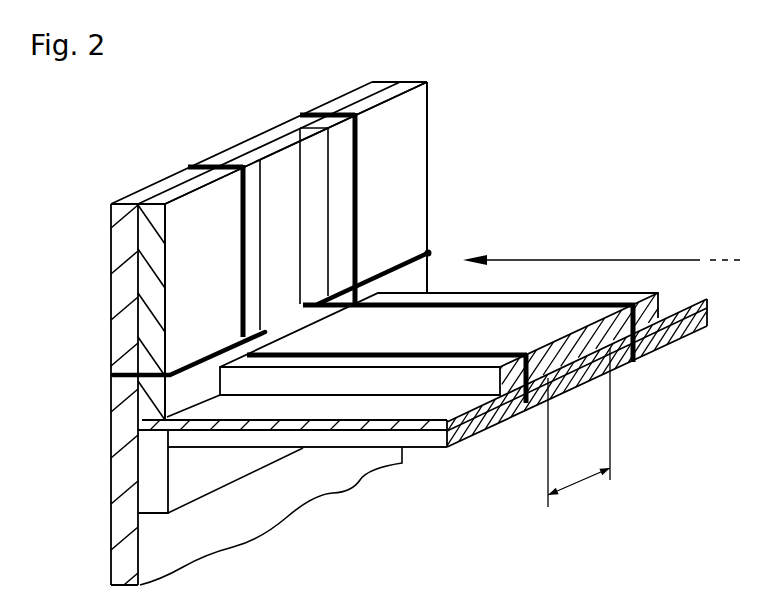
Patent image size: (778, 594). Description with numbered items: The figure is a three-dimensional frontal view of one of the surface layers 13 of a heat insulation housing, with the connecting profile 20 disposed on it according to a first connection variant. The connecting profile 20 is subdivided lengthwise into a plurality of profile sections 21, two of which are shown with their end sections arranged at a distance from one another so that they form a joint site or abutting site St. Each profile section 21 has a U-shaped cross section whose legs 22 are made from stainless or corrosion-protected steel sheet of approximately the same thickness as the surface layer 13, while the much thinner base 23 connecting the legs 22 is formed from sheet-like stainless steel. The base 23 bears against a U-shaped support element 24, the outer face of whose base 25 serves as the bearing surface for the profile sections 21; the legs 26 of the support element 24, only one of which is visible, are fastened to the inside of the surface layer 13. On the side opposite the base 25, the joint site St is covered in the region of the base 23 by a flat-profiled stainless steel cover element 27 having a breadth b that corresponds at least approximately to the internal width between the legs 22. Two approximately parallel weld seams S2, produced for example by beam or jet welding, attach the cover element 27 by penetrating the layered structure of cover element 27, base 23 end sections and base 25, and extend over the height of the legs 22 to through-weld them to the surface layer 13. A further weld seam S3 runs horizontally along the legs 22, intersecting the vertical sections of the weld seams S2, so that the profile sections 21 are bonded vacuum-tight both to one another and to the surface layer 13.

The surface layer 13 is at (125, 228).
The connecting profile 20 is at (170, 192).
The profile section 21 is at (112, 337).
The leg 22 is at (147, 262).
The base 23 is at (167, 430).
The support element 24 is at (413, 462).
The base of support element 25 is at (469, 428).
The leg of support element 26 is at (153, 481).
The cover element 27 is at (380, 380).
The weld seam S2 is at (207, 163).
The weld seam S3 is at (155, 378).
The joint site St is at (579, 428).
The breadth b is at (601, 246).